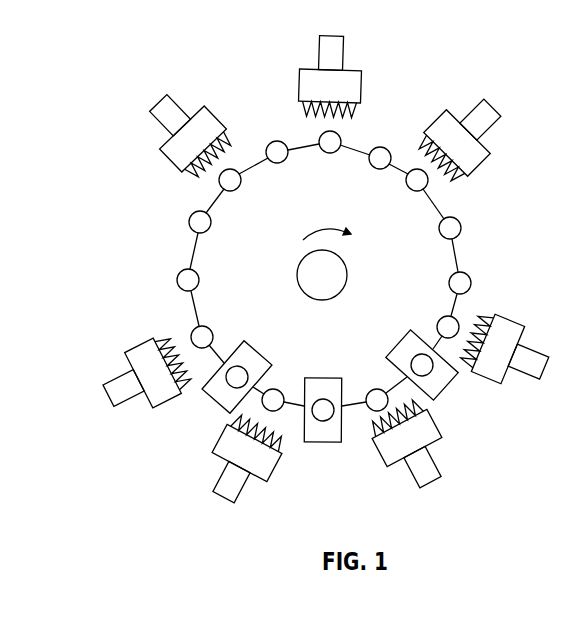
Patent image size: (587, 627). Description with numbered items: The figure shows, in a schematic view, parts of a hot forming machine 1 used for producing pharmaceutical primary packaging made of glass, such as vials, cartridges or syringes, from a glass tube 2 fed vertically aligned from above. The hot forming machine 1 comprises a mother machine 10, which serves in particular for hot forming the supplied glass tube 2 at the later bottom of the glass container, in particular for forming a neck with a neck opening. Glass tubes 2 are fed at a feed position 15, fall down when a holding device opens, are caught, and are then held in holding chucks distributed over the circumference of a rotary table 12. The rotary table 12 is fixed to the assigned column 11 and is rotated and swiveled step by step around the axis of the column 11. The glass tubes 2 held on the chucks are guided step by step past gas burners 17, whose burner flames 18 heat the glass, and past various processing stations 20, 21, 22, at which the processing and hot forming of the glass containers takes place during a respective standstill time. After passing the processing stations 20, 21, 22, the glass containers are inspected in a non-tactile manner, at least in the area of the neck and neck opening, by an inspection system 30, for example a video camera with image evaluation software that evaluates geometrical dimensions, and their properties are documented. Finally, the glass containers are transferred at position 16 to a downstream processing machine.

The hot forming machine 1 is at (40, 65).
The mother machine 10 is at (229, 72).
The column 11 is at (341, 262).
The rotary table 12 is at (458, 253).
The feed position 15 is at (308, 321).
The transfer position 16 is at (458, 242).
The glass tube 2 is at (500, 216).
The gas burner 17 is at (457, 135).
The burner flame 18 is at (423, 140).
The processing station 20 is at (445, 388).
The processing station 21 is at (318, 441).
The processing station 22 is at (217, 402).
The non-tactile inspection system 30 is at (107, 383).